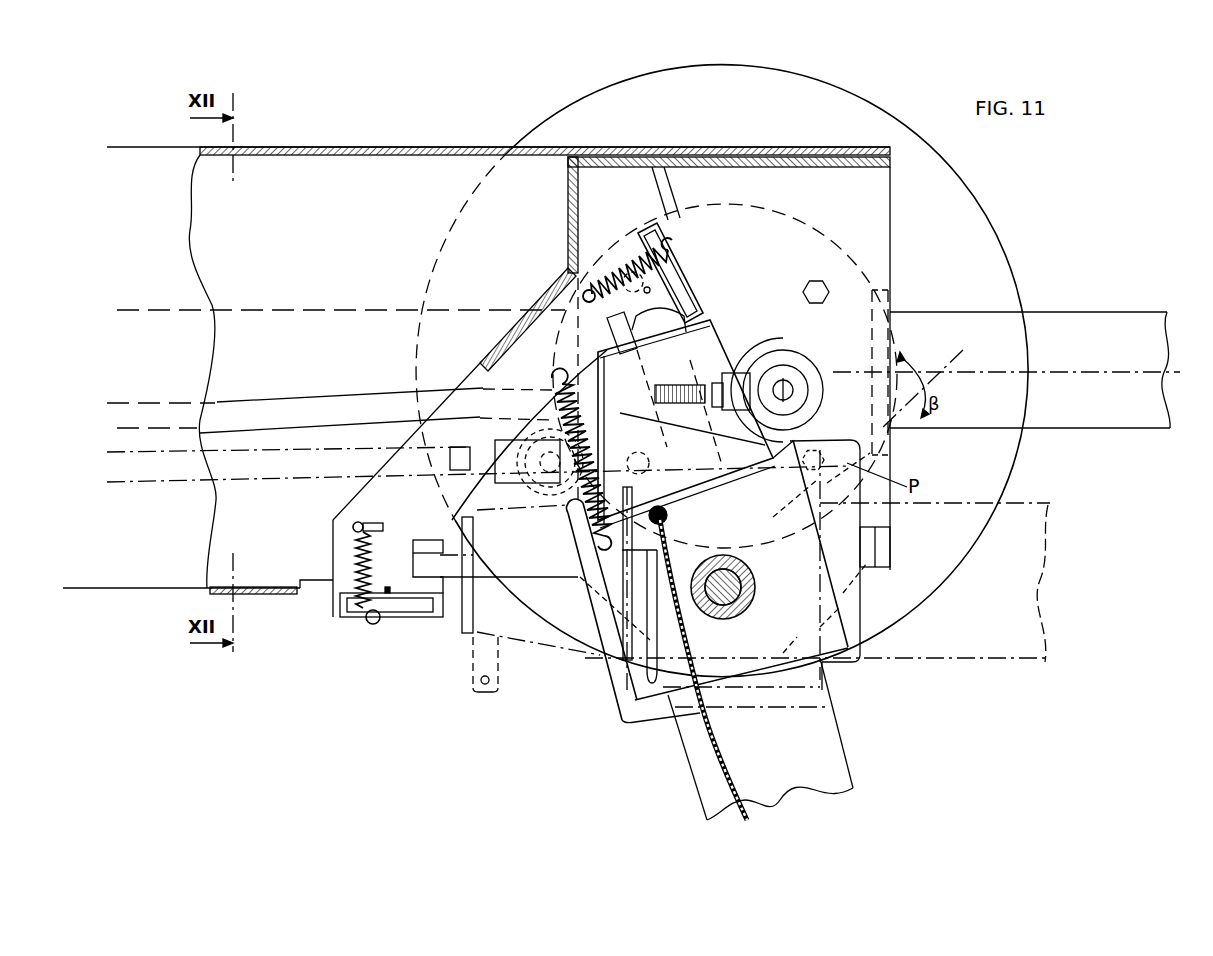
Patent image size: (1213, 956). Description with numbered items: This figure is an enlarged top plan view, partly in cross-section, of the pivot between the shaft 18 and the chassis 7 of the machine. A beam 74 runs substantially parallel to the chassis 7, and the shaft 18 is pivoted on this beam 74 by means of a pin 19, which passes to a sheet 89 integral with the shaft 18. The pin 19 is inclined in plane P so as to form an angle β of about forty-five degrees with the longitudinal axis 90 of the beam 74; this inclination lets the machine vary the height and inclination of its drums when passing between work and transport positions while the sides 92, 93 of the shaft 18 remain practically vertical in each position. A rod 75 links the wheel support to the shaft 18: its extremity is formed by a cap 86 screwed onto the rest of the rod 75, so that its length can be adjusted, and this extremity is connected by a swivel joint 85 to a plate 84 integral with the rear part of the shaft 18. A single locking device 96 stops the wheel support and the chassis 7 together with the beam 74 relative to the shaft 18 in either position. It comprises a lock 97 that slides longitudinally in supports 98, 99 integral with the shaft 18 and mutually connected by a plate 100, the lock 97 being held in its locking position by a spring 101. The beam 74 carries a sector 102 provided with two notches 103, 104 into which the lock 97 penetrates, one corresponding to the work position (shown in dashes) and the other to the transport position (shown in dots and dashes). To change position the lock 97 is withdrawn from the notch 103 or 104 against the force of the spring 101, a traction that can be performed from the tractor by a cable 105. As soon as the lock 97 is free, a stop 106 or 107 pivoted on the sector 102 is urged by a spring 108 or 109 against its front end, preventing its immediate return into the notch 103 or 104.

The chassis 7 is at (1072, 304).
The shaft 18 is at (848, 733).
The pin 19 is at (752, 605).
The beam 74 is at (268, 147).
The rod 75 is at (255, 410).
The plate 84 is at (832, 410).
The swivel joint 85 is at (810, 360).
The cap 86 is at (752, 360).
The sheet 89 is at (756, 587).
The longitudinal axis 90 is at (1102, 372).
The side of shaft 92 is at (693, 792).
The side of shaft 93 is at (850, 763).
The locking device 96 is at (714, 314).
The lock 97 is at (607, 327).
The support 98 is at (607, 350).
The support 99 is at (672, 465).
The plate 100 is at (712, 357).
The spring 101 is at (655, 512).
The sector 102 is at (493, 383).
The notch 103 is at (413, 555).
The notch 104 is at (564, 273).
The cable 105 is at (718, 757).
The stop 106 is at (692, 300).
The stop 107 is at (428, 633).
The spring 108 is at (630, 273).
The spring 109 is at (357, 620).